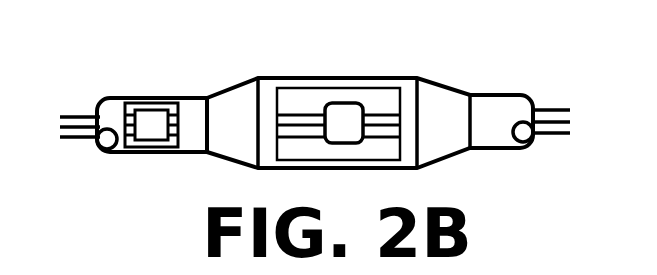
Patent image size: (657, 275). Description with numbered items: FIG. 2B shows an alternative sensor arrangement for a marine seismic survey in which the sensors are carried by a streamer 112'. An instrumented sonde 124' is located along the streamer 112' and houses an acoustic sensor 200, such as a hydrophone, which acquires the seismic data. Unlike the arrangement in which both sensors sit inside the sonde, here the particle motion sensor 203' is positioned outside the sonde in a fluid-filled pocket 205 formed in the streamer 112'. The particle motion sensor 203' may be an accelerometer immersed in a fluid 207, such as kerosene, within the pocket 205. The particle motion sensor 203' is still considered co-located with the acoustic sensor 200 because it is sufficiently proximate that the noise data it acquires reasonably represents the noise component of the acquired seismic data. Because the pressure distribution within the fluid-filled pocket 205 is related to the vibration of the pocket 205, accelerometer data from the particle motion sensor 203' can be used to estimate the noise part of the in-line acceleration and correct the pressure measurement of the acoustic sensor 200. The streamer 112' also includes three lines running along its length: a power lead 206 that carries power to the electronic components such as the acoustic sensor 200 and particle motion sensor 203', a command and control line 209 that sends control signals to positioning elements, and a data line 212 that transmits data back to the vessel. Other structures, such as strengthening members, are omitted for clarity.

The streamer 112' is at (68, 87).
The instrumented sonde 124' is at (360, 93).
The acoustic sensor 200 is at (343, 113).
The particle motion sensor 203' is at (175, 101).
The fluid-filled pocket 205 is at (126, 100).
The fluid 207 is at (125, 153).
The power lead 206 is at (569, 109).
The command and control line 209 is at (571, 122).
The data line 212 is at (569, 135).